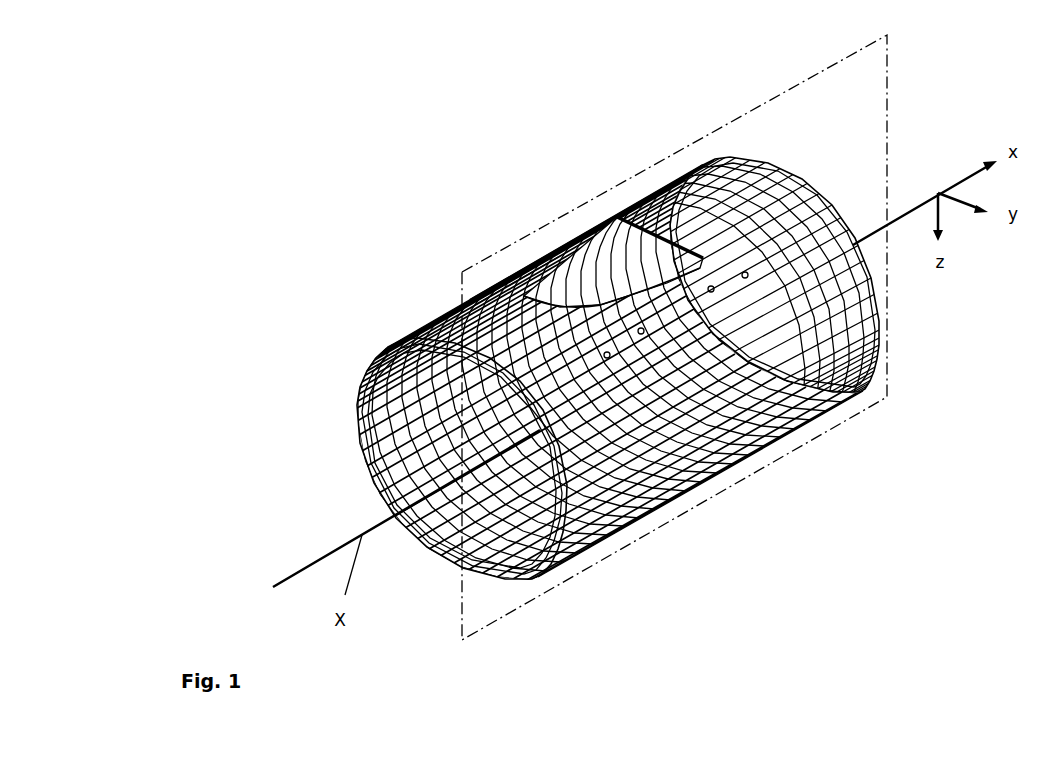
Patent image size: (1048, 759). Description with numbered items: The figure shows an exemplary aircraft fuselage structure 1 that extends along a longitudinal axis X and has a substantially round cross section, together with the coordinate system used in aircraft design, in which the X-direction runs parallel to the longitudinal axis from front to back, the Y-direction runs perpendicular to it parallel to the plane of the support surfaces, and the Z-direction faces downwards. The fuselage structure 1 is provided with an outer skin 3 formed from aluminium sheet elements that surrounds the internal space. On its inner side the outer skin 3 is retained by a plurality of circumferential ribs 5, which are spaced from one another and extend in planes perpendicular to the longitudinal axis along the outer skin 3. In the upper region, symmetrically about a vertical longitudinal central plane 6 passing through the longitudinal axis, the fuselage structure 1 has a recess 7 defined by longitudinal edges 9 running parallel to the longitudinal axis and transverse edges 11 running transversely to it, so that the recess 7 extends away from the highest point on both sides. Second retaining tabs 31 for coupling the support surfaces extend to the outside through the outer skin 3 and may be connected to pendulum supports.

The aircraft fuselage structure 1 is at (366, 270).
The outer skin 3 is at (863, 302).
The circumferential ribs 5 is at (378, 470).
The vertical longitudinal central plane 6 is at (517, 612).
The recess 7 is at (604, 248).
The longitudinal edges 9 is at (641, 310).
The transverse edges 11 is at (537, 309).
The second retaining tabs 31 is at (641, 331).